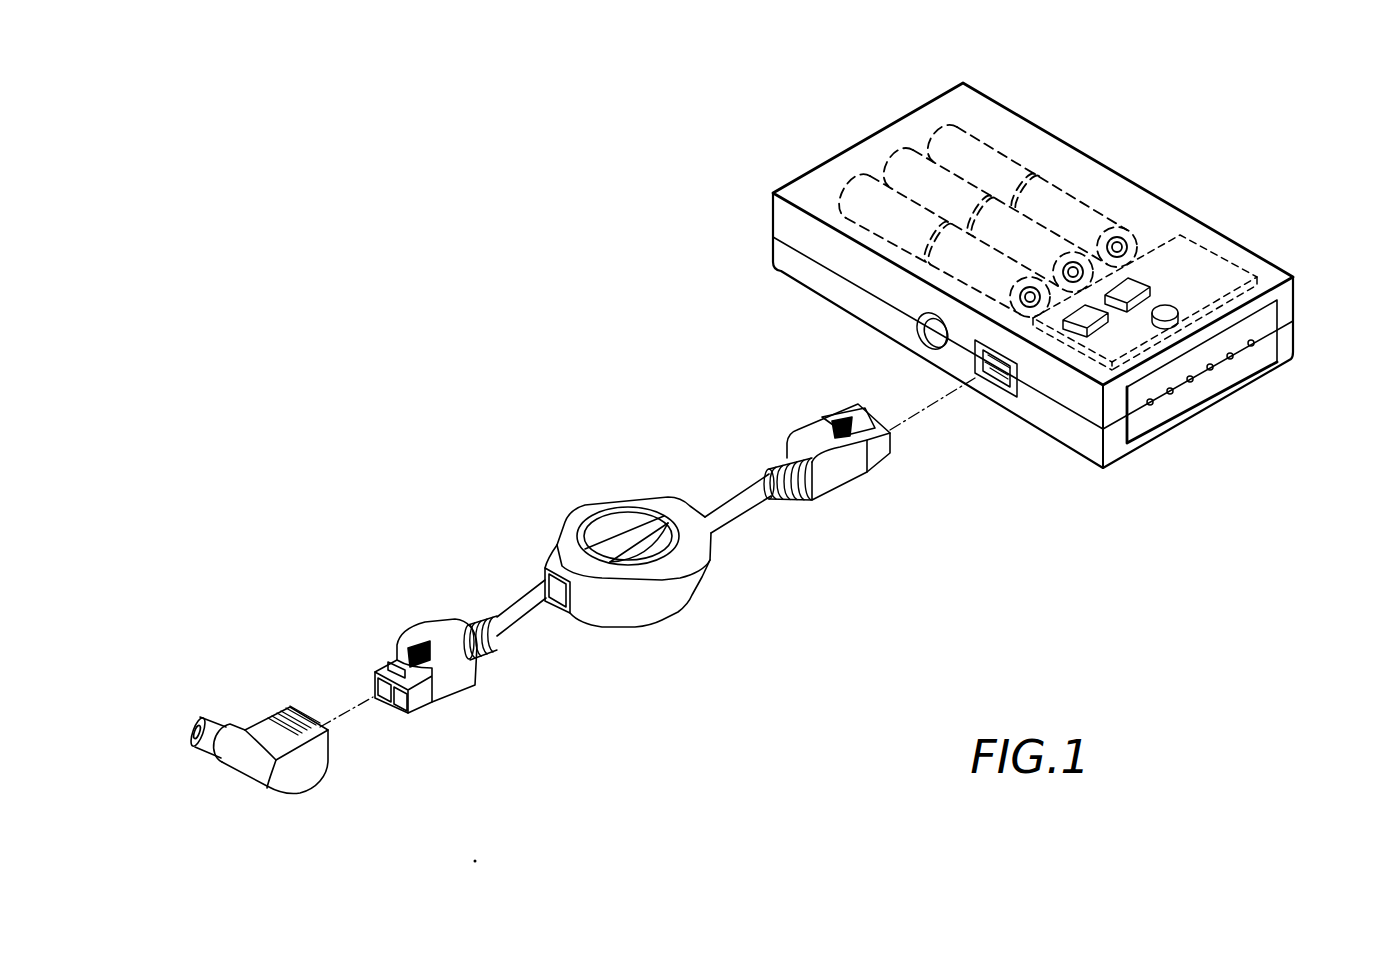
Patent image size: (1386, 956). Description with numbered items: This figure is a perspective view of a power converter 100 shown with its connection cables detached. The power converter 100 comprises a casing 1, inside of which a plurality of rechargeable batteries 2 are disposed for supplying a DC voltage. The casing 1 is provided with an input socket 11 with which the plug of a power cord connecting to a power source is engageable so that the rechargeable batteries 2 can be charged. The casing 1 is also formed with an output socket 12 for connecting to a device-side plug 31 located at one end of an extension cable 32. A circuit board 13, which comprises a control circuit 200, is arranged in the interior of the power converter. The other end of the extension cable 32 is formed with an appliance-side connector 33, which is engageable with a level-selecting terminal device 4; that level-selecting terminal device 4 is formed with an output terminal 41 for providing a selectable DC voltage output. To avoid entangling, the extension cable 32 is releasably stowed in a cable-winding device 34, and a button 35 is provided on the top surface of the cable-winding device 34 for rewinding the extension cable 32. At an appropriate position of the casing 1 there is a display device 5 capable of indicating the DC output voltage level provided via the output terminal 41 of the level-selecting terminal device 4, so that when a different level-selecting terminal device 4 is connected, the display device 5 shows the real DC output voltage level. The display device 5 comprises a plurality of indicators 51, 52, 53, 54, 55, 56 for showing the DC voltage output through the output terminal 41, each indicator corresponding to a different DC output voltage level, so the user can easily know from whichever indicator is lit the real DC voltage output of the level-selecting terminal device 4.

The power converter 100 is at (786, 139).
The casing 1 is at (1075, 167).
The rechargeable batteries 2 is at (977, 150).
The control circuit 200 is at (1155, 258).
The circuit board 13 is at (1230, 262).
The input socket 11 is at (918, 331).
The output socket 12 is at (1006, 377).
The display device 5 is at (1385, 395).
The indicator 51 is at (1152, 404).
The indicator 52 is at (1171, 392).
The indicator 53 is at (1191, 380).
The indicator 54 is at (1211, 368).
The indicator 55 is at (1231, 356).
The indicator 56 is at (1252, 343).
The device-side plug 31 is at (837, 482).
The extension cable 32 is at (732, 515).
The appliance-side connector 33 is at (452, 680).
The cable-winding device 34 is at (650, 602).
The button 35 is at (632, 530).
The level-selecting terminal device 4 is at (298, 767).
The output terminal 41 is at (216, 720).